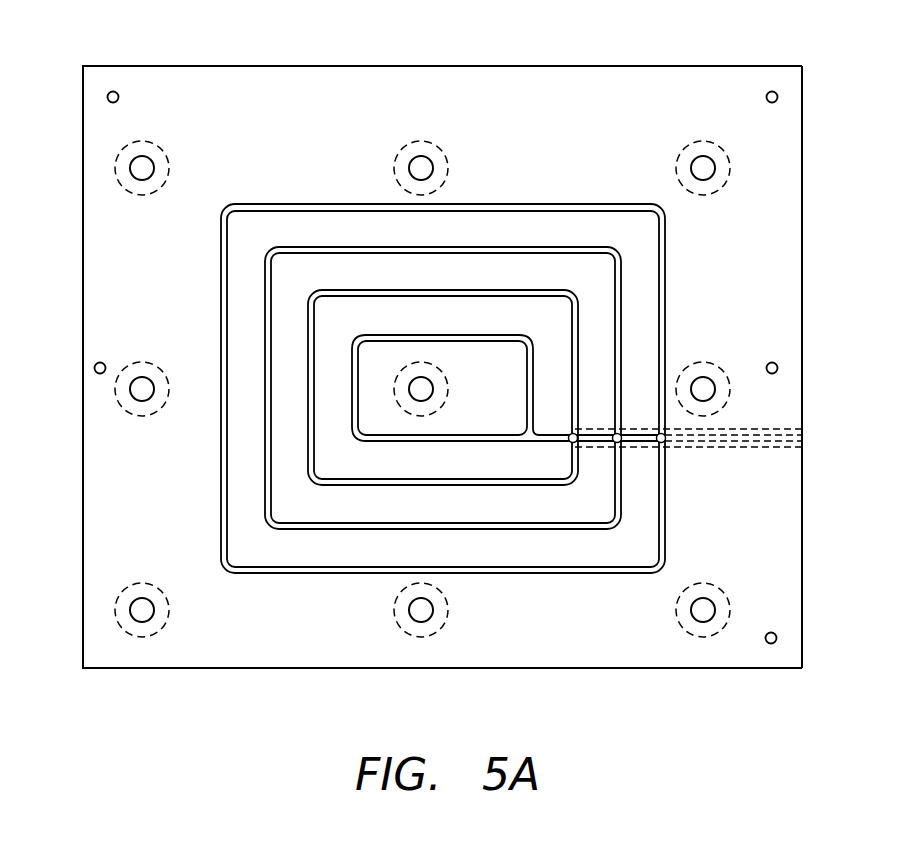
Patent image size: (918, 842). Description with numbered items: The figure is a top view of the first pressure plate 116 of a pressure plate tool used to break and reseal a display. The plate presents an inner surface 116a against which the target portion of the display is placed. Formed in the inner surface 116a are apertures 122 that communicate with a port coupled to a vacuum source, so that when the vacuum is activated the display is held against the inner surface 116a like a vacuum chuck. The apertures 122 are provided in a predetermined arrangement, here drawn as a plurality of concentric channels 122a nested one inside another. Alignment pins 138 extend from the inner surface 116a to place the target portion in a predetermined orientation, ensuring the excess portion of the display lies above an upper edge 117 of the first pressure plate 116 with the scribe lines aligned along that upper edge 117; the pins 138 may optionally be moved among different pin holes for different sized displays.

The first pressure plate 116 is at (448, 338).
The inner surface 116a is at (788, 315).
The upper edge 117 is at (83, 518).
The apertures 122 is at (511, 417).
The concentric channels 122a is at (548, 530).
The alignment pins 138 is at (112, 91).